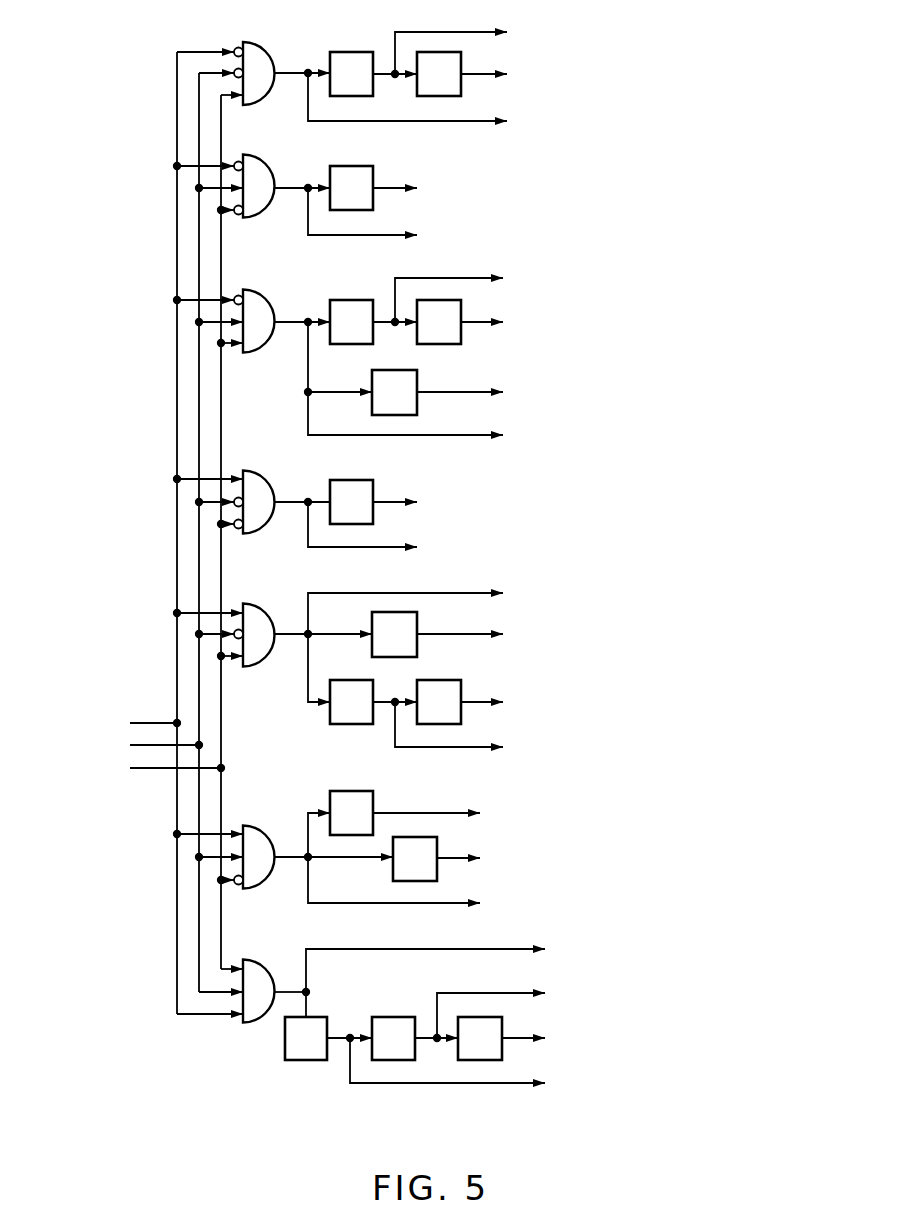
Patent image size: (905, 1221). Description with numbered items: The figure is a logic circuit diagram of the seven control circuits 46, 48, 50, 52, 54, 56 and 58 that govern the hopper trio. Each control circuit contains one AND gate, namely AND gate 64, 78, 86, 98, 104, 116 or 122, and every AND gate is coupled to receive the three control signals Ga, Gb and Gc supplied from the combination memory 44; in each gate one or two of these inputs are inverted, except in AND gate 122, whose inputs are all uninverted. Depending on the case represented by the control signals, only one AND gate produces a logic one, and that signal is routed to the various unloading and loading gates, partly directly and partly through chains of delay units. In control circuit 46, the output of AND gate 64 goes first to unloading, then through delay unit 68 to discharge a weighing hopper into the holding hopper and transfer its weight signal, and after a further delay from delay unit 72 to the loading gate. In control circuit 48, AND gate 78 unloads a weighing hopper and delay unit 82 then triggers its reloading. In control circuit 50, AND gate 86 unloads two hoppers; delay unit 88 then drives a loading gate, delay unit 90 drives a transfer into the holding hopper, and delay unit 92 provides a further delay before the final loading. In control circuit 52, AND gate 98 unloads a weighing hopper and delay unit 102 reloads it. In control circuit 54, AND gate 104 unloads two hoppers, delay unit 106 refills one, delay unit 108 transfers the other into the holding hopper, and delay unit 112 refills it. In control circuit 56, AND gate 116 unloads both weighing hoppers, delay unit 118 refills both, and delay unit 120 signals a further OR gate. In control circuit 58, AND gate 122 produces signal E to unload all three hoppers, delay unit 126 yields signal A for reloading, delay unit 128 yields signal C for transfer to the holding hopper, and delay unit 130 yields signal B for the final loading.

The combination memory 44 is at (145, 533).
The control circuit 46 is at (91, 84).
The control circuit 48 is at (91, 197).
The control circuit 50 is at (91, 332).
The control circuit 52 is at (91, 512).
The control circuit 54 is at (91, 645).
The control circuit 56 is at (91, 867).
The control circuit 58 is at (91, 1001).
The AND gate 64 is at (266, 53).
The delay unit 68 is at (352, 53).
The delay unit 72 is at (462, 55).
The AND gate 78 is at (268, 168).
The delay unit 82 is at (352, 168).
The AND gate 86 is at (268, 303).
The delay unit 88 is at (425, 376).
The delay unit 90 is at (352, 303).
The delay unit 92 is at (462, 303).
The AND gate 98 is at (278, 485).
The delay unit 102 is at (356, 485).
The AND gate 104 is at (268, 608).
The delay unit 106 is at (417, 619).
The delay unit 108 is at (339, 680).
The delay unit 112 is at (444, 680).
The AND gate 116 is at (266, 830).
The delay unit 118 is at (375, 793).
The delay unit 120 is at (391, 874).
The AND gate 122 is at (268, 963).
The delay unit 126 is at (307, 1060).
The delay unit 128 is at (394, 1017).
The delay unit 130 is at (468, 1060).